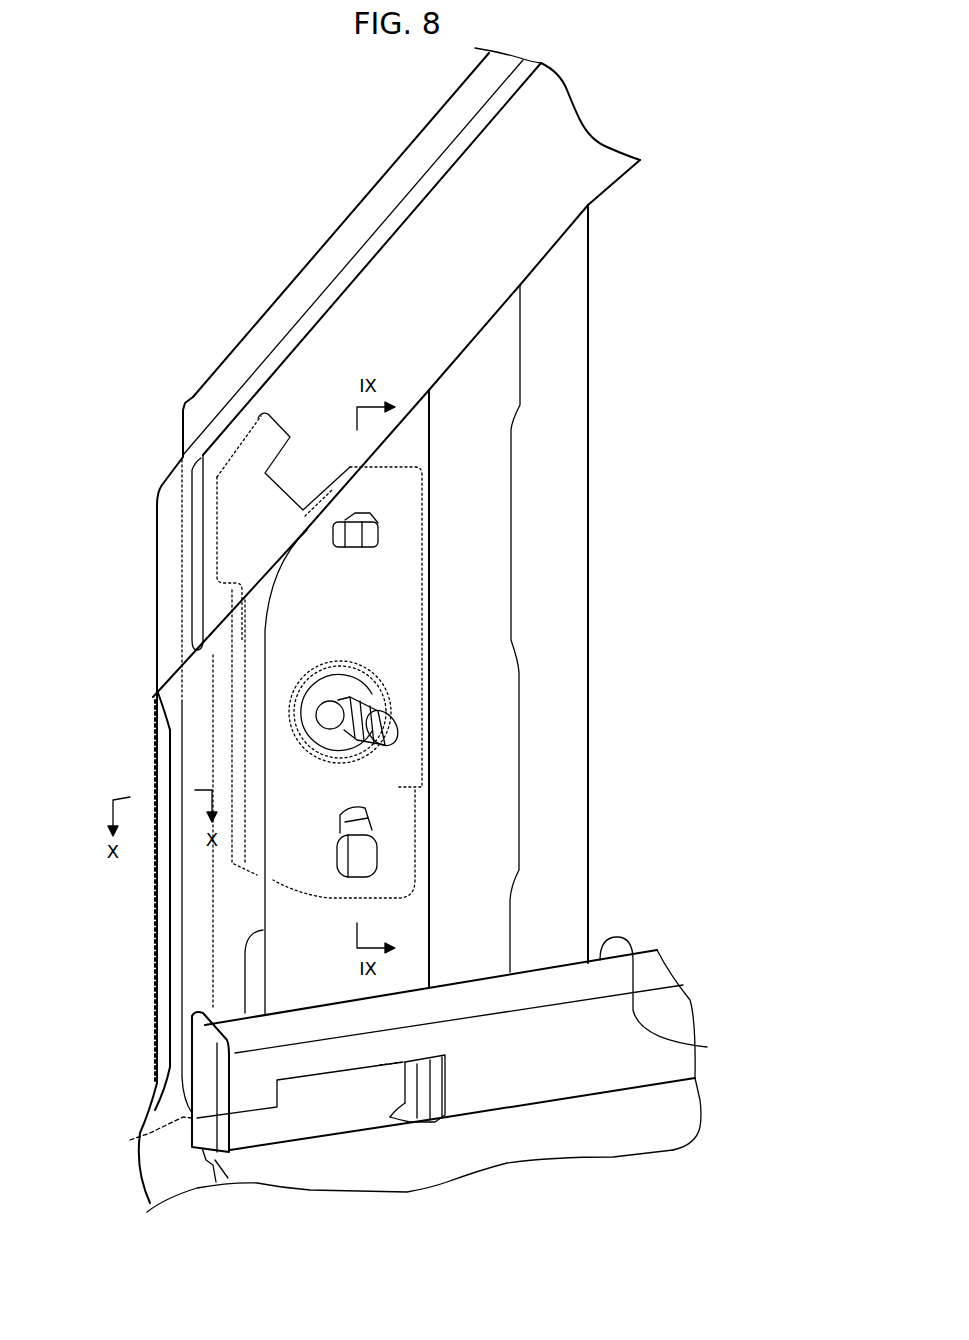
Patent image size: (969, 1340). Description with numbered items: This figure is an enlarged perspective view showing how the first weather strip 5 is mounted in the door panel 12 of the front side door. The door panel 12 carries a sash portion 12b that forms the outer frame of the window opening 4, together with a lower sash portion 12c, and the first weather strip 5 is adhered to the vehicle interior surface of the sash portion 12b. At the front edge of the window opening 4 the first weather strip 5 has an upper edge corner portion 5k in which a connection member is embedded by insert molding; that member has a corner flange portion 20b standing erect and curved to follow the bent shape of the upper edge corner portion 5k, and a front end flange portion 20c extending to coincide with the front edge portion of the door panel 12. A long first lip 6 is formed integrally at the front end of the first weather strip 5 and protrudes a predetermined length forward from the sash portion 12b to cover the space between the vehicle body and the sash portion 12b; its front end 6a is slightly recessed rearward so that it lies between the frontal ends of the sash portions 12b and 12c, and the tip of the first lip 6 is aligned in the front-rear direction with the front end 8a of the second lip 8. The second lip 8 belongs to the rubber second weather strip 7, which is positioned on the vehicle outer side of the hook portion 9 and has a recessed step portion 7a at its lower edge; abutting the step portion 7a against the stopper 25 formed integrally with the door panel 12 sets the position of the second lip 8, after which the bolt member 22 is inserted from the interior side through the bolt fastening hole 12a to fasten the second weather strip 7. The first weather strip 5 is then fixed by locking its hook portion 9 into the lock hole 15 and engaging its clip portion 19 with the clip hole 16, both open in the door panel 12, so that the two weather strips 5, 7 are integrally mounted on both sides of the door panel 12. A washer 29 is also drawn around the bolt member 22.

The window opening 4 is at (466, 1043).
The first weather strip 5 is at (372, 176).
The upper edge corner portion 5k is at (238, 405).
The first lip 6 is at (157, 553).
The front end 6a is at (170, 905).
The second weather strip 7 is at (177, 1125).
The step portion 7a is at (420, 1117).
The second lip 8 is at (155, 772).
The front end 8a is at (155, 967).
The hook portion 9 is at (370, 855).
The door panel 12 is at (614, 185).
The bolt fastening hole 12a is at (382, 705).
The sash portion 12b is at (305, 377).
The lower sash portion 12c is at (277, 1127).
The lock hole 15 is at (372, 825).
The clip hole 16 is at (368, 515).
The clip portion 19 is at (378, 536).
The corner flange portion 20b is at (250, 455).
The front end flange portion 20c is at (250, 692).
The bolt member 22 is at (385, 730).
The stopper 25 is at (387, 1130).
The washer 29 is at (378, 670).